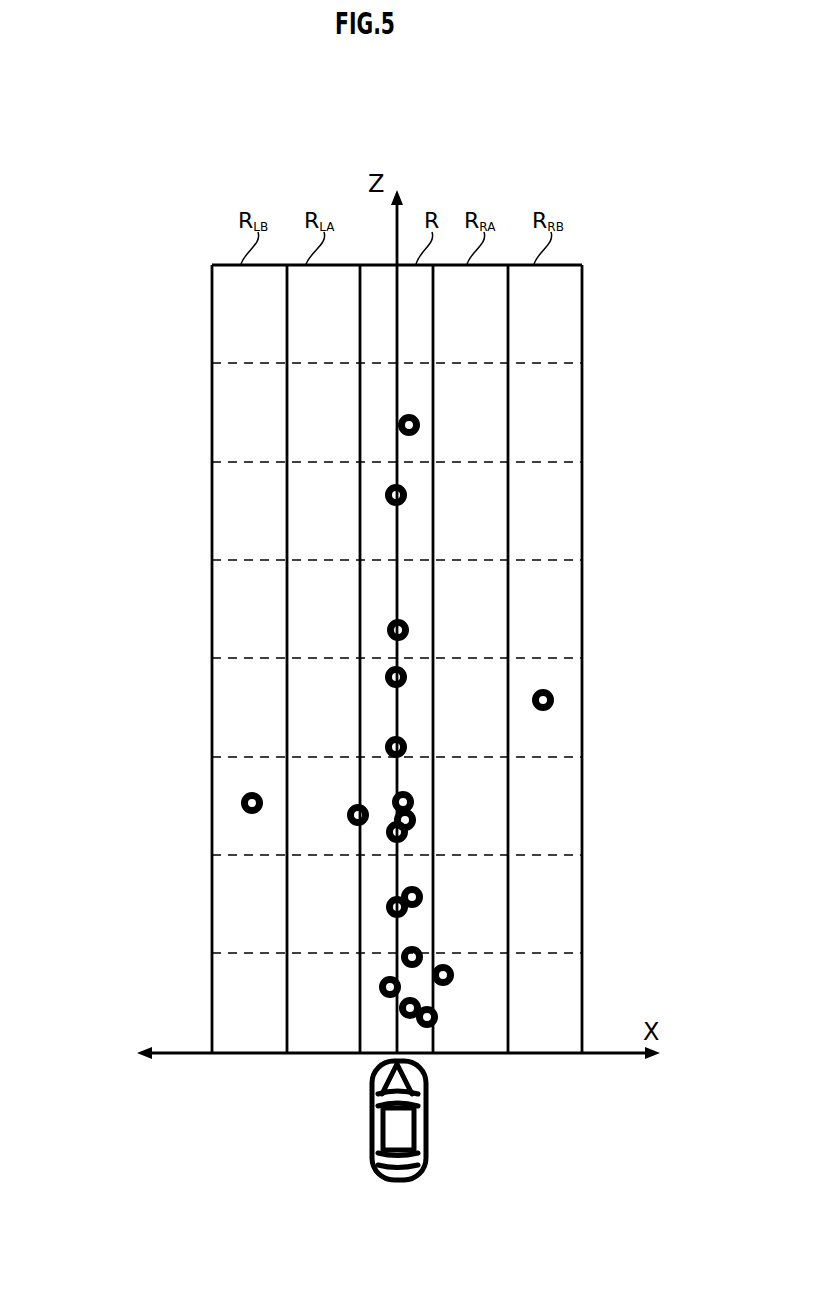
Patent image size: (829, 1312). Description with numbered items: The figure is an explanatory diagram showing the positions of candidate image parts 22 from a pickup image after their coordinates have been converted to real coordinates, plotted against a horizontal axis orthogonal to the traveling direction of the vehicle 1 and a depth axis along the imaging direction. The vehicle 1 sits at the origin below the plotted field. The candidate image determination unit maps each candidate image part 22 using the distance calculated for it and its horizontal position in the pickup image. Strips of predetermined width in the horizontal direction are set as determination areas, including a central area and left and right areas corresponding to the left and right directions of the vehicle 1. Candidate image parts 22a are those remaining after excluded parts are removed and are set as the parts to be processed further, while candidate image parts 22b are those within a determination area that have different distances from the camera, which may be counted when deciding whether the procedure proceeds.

The vehicle 1 is at (428, 1140).
The candidate image parts 22 is at (393, 696).
The candidate image parts to be processed 22a is at (421, 424).
The candidate image parts having different distances 22b is at (404, 672).